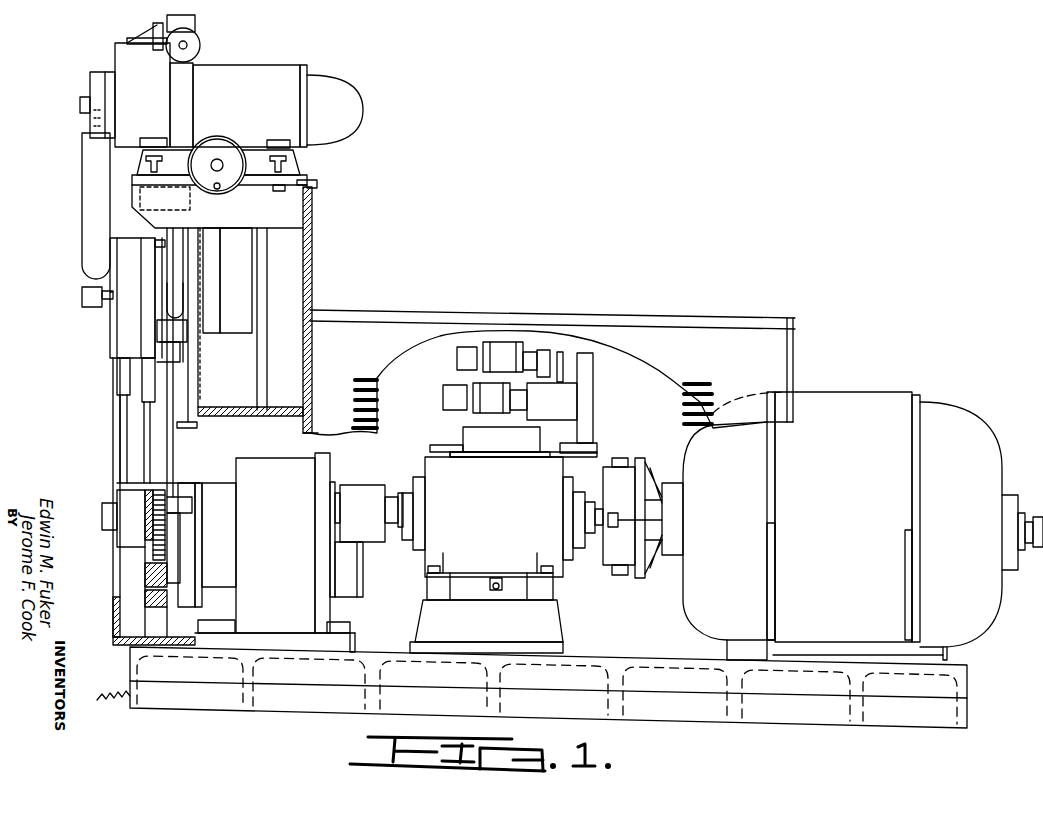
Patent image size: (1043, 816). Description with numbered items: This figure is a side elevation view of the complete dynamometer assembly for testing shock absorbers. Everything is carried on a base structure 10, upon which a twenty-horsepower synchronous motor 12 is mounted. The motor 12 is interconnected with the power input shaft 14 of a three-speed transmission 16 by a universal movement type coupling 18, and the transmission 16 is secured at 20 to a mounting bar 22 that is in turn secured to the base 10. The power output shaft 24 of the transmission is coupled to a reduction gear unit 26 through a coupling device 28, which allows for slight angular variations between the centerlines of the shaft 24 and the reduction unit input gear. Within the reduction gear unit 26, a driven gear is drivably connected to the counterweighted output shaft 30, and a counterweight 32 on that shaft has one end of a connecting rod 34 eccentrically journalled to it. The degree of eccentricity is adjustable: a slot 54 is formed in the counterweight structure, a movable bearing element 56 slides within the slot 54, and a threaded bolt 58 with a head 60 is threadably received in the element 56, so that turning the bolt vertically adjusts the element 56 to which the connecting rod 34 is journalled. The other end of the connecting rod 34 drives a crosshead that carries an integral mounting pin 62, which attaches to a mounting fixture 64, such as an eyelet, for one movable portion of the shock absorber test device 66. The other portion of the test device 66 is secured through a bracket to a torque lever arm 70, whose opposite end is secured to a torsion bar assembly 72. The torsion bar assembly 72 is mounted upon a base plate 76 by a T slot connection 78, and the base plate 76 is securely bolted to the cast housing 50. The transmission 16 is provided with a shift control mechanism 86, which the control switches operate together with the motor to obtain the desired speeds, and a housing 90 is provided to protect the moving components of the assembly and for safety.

The base structure 10 is at (968, 700).
The synchronous motor 12 is at (862, 502).
The power input shaft 14 is at (603, 556).
The three-speed transmission 16 is at (528, 527).
The universal movement type coupling 18 is at (648, 577).
The securing location 20 is at (555, 588).
The mounting bar 22 is at (508, 633).
The power output shaft 24 is at (392, 540).
The reduction gear unit 26 is at (294, 553).
The coupling device 28 is at (375, 523).
The counterweighted output shaft 30 is at (188, 480).
The counterweight 32 is at (160, 560).
The connecting rod 34 is at (130, 412).
The cast housing 50 is at (290, 188).
The slot 54 is at (130, 540).
The movable bearing element 56 is at (145, 503).
The threaded bolt 58 is at (140, 490).
The head 60 is at (170, 455).
The mounting pin 62 is at (108, 300).
The mounting fixture 64 is at (82, 297).
The shock absorber test device 66 is at (73, 232).
The torque lever arm 70 is at (90, 78).
The torsion bar assembly 72 is at (250, 97).
The base plate 76 is at (300, 172).
The T slot connection 78 is at (272, 180).
The shift control mechanism 86 is at (607, 401).
The housing 90 is at (560, 312).